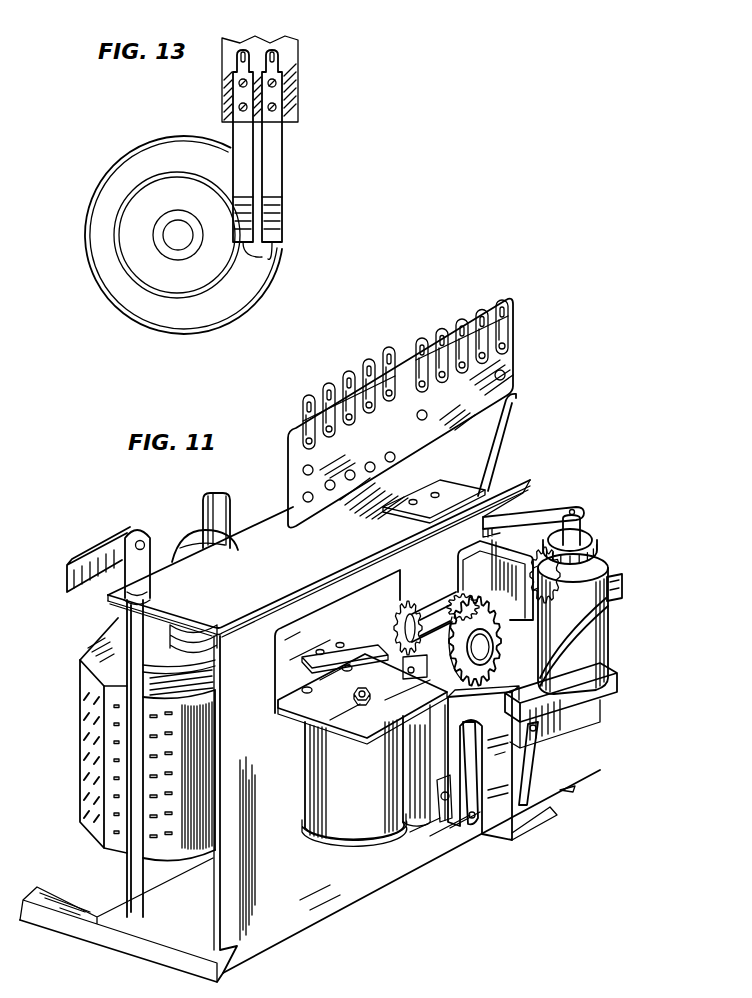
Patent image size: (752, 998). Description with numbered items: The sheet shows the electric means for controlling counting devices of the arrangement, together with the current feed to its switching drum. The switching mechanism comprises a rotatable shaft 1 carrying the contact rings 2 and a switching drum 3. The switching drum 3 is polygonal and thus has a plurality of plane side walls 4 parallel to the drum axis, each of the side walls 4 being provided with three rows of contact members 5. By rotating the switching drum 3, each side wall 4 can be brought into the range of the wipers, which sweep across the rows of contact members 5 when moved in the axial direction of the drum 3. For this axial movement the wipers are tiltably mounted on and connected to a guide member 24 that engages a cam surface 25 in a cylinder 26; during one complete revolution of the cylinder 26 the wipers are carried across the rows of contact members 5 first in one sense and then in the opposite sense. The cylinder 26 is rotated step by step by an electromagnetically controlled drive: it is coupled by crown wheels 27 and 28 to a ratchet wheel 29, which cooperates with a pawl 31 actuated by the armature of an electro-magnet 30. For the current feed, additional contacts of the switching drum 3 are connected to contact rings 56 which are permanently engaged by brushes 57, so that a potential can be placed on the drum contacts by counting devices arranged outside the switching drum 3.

In FIG. 11, the rotatable shaft 1 is at (229, 512).
In FIG. 11, the contact rings 2 is at (172, 561).
In FIG. 11, the switching drum 3 is at (108, 637).
In FIG. 11, the side walls 4 is at (103, 850).
In FIG. 11, the contact members 5 is at (95, 724).
In FIG. 11, the guide member 24 is at (613, 587).
In FIG. 11, the cam surface 25 is at (608, 625).
In FIG. 11, the cylinder 26 is at (604, 654).
In FIG. 11, the crown wheel 27 is at (586, 542).
In FIG. 11, the crown wheel 28 is at (455, 603).
In FIG. 11, the ratchet wheel 29 is at (396, 629).
In FIG. 11, the electro-magnet 30 is at (327, 782).
In FIG. 11, the pawl 31 is at (428, 668).
In FIG. 13, the contact rings 56 is at (158, 300).
In FIG. 13, the brushes 57 is at (273, 163).